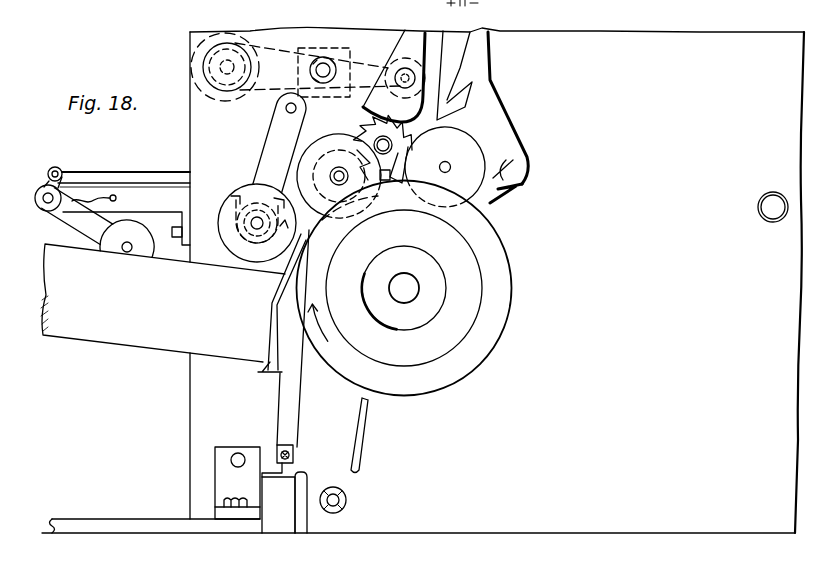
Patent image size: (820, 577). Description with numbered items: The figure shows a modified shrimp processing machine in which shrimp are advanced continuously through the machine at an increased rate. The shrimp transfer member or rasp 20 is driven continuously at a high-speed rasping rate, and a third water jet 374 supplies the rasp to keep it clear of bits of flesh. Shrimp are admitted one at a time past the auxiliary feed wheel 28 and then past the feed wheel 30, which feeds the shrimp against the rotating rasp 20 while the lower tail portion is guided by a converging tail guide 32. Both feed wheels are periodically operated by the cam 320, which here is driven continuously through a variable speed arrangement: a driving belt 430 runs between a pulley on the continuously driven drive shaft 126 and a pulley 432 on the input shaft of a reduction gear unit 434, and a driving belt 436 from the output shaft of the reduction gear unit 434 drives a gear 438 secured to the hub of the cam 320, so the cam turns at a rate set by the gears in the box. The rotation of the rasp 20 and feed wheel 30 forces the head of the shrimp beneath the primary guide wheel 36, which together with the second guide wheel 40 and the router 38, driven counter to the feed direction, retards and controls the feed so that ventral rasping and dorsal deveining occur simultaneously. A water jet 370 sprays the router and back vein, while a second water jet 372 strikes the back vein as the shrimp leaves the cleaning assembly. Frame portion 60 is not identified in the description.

The rasp 20 is at (495, 299).
The feed indexing wheel 28 is at (142, 258).
The feed wheel 30 is at (252, 254).
The tail guide 32 is at (260, 374).
The primary guide wheel 36 is at (319, 208).
The router 38 is at (395, 180).
The second driven guide wheel 40 is at (475, 160).
The frame 60 is at (190, 481).
The jack shaft 126 is at (417, 75).
The cam 320 is at (201, 43).
The water jet 370 is at (447, 104).
The second water jet 372 is at (518, 191).
The third water jet 374 is at (356, 440).
The driving belt 430 is at (386, 63).
The pulley 432 is at (350, 28).
The reduction gear unit 434 is at (312, 47).
The driving belt 436 is at (256, 92).
The gear 438 is at (220, 64).